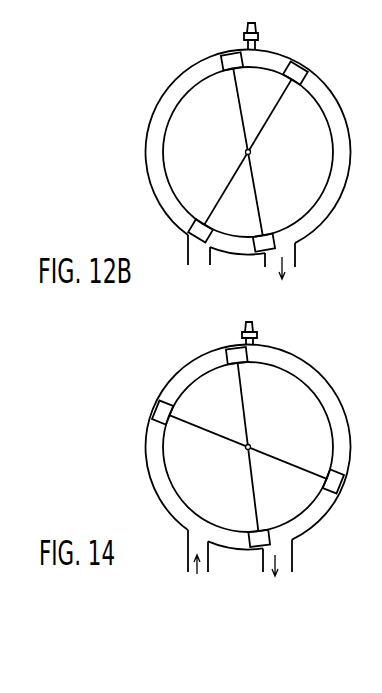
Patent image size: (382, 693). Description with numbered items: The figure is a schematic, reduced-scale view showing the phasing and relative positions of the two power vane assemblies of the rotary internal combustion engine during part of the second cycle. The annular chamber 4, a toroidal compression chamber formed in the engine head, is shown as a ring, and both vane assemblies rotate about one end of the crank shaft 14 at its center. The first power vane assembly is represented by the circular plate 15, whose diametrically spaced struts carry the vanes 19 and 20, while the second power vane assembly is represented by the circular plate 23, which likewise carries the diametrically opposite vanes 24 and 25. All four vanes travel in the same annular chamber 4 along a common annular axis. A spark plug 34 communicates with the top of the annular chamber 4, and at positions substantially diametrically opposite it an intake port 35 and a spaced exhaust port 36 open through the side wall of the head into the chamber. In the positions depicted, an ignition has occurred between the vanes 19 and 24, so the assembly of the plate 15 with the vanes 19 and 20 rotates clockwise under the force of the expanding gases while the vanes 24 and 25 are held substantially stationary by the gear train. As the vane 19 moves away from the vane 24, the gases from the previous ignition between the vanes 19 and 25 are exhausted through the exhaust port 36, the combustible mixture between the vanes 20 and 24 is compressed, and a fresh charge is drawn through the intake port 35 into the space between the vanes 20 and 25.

In FIG. 12B, the annular chamber 4 is at (334, 91).
In FIG. 12B, the crank shaft 14 is at (252, 154).
In FIG. 12B, the circular plate 15 is at (271, 113).
In FIG. 14, the circular plate 15 is at (222, 438).
In FIG. 12B, the vane 19 is at (301, 71).
In FIG. 14, the vane 19 is at (340, 483).
In FIG. 12B, the vane 20 is at (203, 221).
In FIG. 14, the vane 20 is at (158, 407).
In FIG. 12B, the circular plate 23 is at (240, 110).
In FIG. 12B, the vane 24 is at (233, 54).
In FIG. 14, the vane 24 is at (236, 350).
In FIG. 12B, the vane 25 is at (270, 233).
In FIG. 14, the vane 25 is at (263, 533).
In FIG. 12B, the spark plug 34 is at (258, 31).
In FIG. 12B, the intake port 35 is at (191, 246).
In FIG. 12B, the exhaust port 36 is at (290, 251).